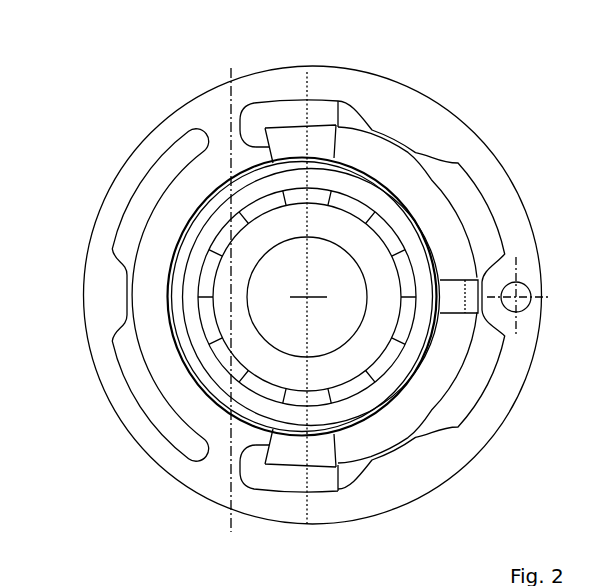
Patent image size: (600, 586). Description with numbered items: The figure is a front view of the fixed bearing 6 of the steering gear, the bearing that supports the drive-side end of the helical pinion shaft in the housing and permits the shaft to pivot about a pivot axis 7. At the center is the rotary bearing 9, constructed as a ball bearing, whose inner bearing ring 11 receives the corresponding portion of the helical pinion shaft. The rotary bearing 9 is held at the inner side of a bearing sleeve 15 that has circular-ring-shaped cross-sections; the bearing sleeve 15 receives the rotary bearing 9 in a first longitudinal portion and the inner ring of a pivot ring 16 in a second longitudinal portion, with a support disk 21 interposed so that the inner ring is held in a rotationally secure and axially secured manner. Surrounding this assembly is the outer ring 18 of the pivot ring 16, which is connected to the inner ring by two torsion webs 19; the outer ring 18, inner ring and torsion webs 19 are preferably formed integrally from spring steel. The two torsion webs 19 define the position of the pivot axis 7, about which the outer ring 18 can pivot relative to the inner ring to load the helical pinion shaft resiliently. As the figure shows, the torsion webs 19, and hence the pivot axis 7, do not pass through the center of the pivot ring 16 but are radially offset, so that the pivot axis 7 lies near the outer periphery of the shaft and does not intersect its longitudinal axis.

The fixed bearing 6 is at (116, 110).
The pivot axis 7 is at (228, 526).
The rotary bearing 9 is at (212, 341).
The inner bearing ring 11 is at (227, 317).
The bearing sleeve 15 is at (333, 150).
The pivot ring 16 is at (98, 212).
The outer ring 18 is at (100, 285).
The torsion webs 19 is at (225, 140).
The support disk 21 is at (212, 450).